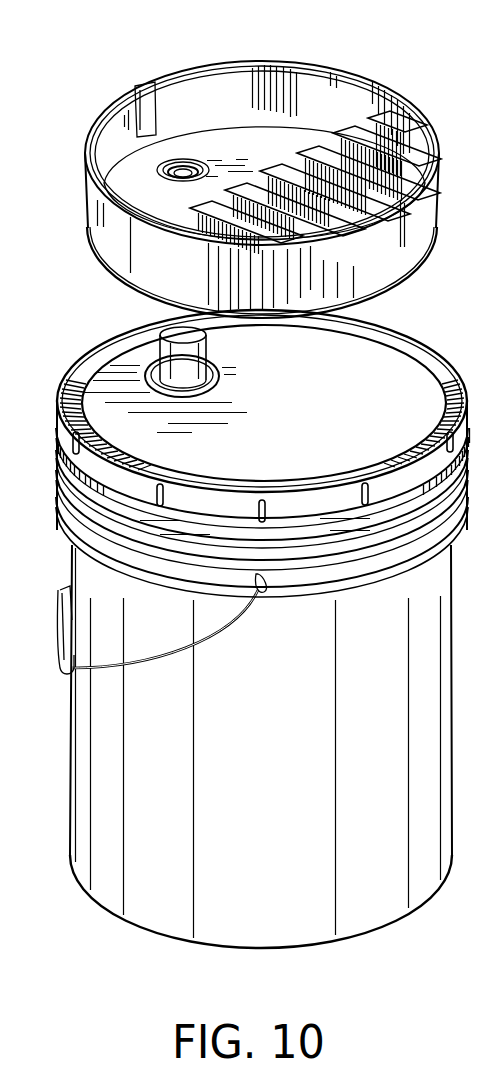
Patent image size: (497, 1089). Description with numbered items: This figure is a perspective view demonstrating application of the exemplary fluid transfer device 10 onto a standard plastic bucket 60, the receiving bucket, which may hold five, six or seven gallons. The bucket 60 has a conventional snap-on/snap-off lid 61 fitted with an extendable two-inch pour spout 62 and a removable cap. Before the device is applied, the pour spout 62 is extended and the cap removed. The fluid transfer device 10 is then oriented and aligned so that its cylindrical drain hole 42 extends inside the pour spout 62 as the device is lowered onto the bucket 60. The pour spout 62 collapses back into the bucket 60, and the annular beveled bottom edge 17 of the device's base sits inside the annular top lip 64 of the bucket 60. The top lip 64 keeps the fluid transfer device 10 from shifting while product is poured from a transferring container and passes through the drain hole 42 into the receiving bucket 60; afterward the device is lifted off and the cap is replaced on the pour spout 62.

The fluid transfer device 10 is at (287, 165).
The bottom edge 17 is at (442, 247).
The drain hole 42 is at (183, 160).
The bucket 60 is at (263, 758).
The lid 61 is at (67, 415).
The pour spout 62 is at (166, 370).
The top lip 64 is at (401, 345).